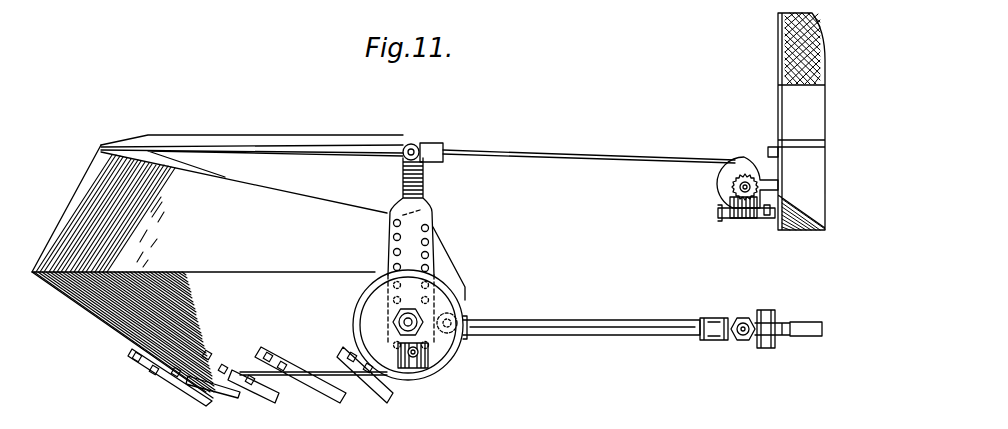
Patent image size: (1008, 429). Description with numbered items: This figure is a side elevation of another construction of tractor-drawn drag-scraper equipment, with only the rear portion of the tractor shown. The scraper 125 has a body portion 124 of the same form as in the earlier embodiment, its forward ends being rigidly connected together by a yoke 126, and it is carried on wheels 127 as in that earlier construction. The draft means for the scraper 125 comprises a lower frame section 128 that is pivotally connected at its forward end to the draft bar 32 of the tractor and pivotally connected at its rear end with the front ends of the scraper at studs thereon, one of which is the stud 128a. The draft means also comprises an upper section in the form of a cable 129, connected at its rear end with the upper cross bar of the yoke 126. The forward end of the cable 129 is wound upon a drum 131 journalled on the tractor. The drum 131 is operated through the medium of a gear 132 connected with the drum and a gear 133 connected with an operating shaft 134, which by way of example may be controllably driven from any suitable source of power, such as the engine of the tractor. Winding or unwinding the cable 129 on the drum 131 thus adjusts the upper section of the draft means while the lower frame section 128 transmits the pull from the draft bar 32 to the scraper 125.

The draft bar 32 is at (805, 320).
The body portion 124 is at (272, 207).
The scraper 125 is at (69, 205).
The yoke 126 is at (430, 211).
The wheels 127 is at (463, 350).
The lower frame section 128 is at (607, 314).
The stud 128a is at (410, 373).
The cable 129 is at (598, 146).
The drum 131 is at (718, 182).
The gear 132 is at (738, 173).
The gear 133 is at (753, 220).
The operating shaft 134 is at (718, 210).